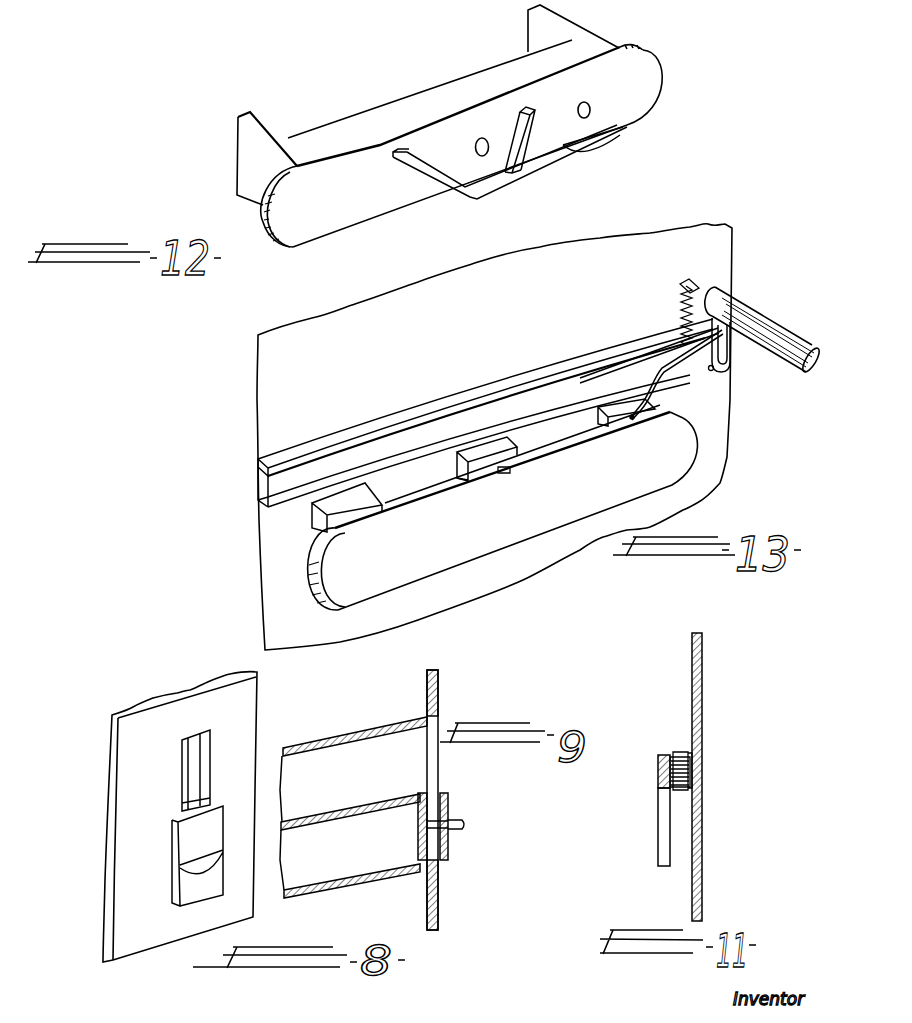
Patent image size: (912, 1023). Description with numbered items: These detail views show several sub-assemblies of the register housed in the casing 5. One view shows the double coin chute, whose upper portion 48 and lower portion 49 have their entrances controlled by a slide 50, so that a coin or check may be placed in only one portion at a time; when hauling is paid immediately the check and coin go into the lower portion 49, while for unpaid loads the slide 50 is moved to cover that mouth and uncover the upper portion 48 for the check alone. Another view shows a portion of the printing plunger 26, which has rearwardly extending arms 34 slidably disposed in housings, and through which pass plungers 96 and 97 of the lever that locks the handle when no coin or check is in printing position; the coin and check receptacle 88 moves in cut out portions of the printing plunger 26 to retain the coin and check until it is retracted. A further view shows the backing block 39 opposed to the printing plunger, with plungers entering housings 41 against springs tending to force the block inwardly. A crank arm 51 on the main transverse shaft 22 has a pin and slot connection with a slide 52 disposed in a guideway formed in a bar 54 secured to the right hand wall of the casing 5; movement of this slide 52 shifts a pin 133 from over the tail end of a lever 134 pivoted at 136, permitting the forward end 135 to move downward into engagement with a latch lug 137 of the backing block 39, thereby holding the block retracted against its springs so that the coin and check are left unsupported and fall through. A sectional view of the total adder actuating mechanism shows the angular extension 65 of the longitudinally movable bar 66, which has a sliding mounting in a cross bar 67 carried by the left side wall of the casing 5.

In FIG. 13, the casing 5 is at (494, 437).
In FIG. 8, the casing 5 is at (180, 817).
In FIG. 9, the casing 5 is at (440, 681).
In FIG. 11, the casing 5 is at (702, 717).
In FIG. 13, the main transverse shaft 22 is at (783, 332).
In FIG. 12, the printing plunger 26 is at (462, 143).
In FIG. 12, the rearwardly extending arms 34 is at (273, 127).
In FIG. 13, the backing block 39 is at (503, 507).
In FIG. 13, the housings 41 is at (483, 465).
In FIG. 8, the upper portion of coin chute 48 is at (200, 752).
In FIG. 9, the upper portion of coin chute 48 is at (353, 773).
In FIG. 9, the lower portion of coin chute 49 is at (364, 845).
In FIG. 8, the slide 50 is at (197, 856).
In FIG. 9, the slide 50 is at (449, 808).
In FIG. 13, the crank arm 51 is at (737, 356).
In FIG. 13, the slide 52 is at (474, 441).
In FIG. 13, the bar 54 is at (512, 384).
In FIG. 11, the angular extension 65 is at (662, 822).
In FIG. 11, the longitudinally movable bar 66 is at (660, 772).
In FIG. 11, the cross bar 67 is at (677, 751).
In FIG. 12, the coin and check receptacle 88 is at (523, 178).
In FIG. 12, the plunger 96 is at (476, 148).
In FIG. 12, the plunger 97 is at (590, 108).
In FIG. 13, the pin 133 is at (730, 322).
In FIG. 13, the lever 134 is at (709, 366).
In FIG. 13, the forward end of lever 135 is at (478, 465).
In FIG. 13, the pivot 136 is at (632, 421).
In FIG. 13, the latch lug 137 is at (507, 473).